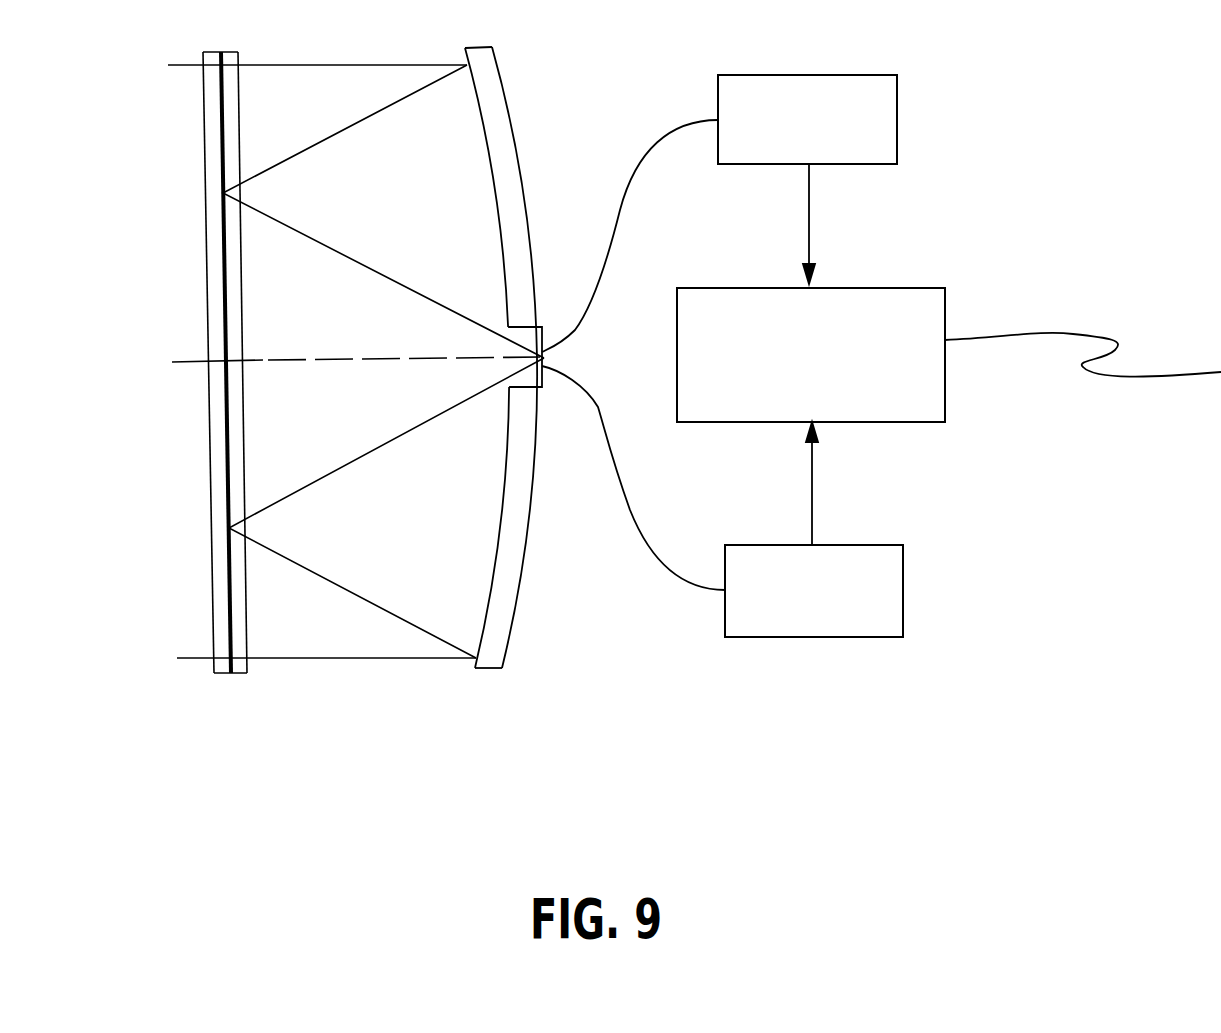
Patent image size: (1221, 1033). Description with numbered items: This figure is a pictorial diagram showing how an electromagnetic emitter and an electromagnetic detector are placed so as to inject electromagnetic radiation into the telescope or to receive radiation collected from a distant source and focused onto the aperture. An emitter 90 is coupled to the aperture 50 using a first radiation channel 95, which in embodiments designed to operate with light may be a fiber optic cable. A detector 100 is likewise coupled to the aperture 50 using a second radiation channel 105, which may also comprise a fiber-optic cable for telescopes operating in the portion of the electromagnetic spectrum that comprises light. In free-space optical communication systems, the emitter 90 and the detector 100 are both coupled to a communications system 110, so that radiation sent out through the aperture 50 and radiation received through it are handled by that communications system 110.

The aperture 50 is at (541, 327).
The emitter 90 is at (897, 113).
The first radiation channel 95 is at (620, 212).
The detector 100 is at (903, 588).
The second radiation channel 105 is at (613, 458).
The communications system 110 is at (945, 378).